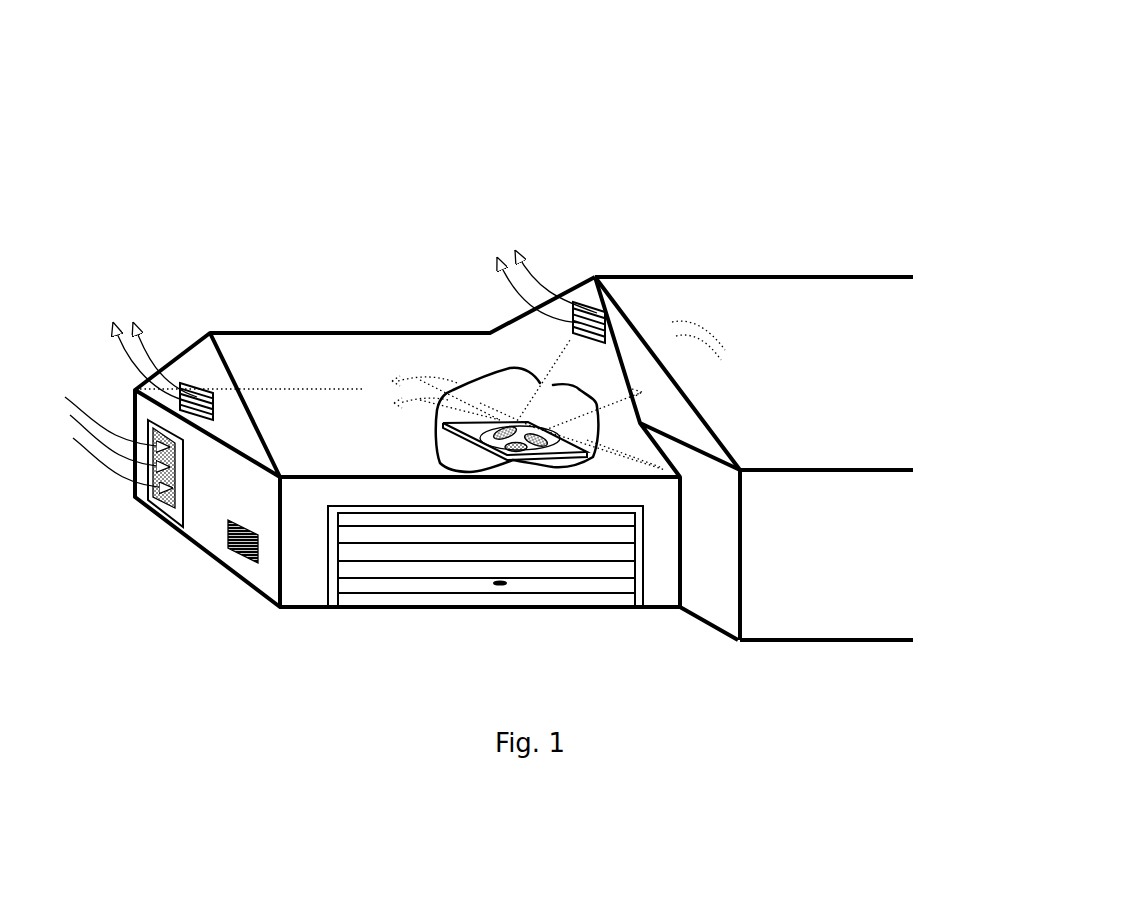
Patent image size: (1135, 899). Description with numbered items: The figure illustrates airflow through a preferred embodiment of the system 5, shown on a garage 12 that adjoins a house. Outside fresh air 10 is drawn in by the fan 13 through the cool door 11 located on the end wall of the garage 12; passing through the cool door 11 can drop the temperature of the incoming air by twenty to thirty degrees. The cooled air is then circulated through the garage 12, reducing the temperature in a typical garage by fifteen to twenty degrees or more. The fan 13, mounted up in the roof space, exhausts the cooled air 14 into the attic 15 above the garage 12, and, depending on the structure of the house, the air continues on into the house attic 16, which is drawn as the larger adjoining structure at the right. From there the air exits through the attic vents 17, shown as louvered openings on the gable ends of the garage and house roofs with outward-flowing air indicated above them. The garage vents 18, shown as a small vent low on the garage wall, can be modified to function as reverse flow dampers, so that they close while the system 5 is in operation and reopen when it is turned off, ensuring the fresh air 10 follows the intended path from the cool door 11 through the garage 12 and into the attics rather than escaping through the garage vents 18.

The system 5 is at (173, 228).
The outside fresh air 10 is at (353, 392).
The cool door 11 is at (175, 514).
The garage 12 is at (215, 468).
The fan 13 is at (512, 413).
The cooled air 14 is at (408, 362).
The attic 15 is at (790, 552).
The house attic 16 is at (817, 340).
The attic vents 17 is at (567, 292).
The garage vents 18 is at (245, 550).